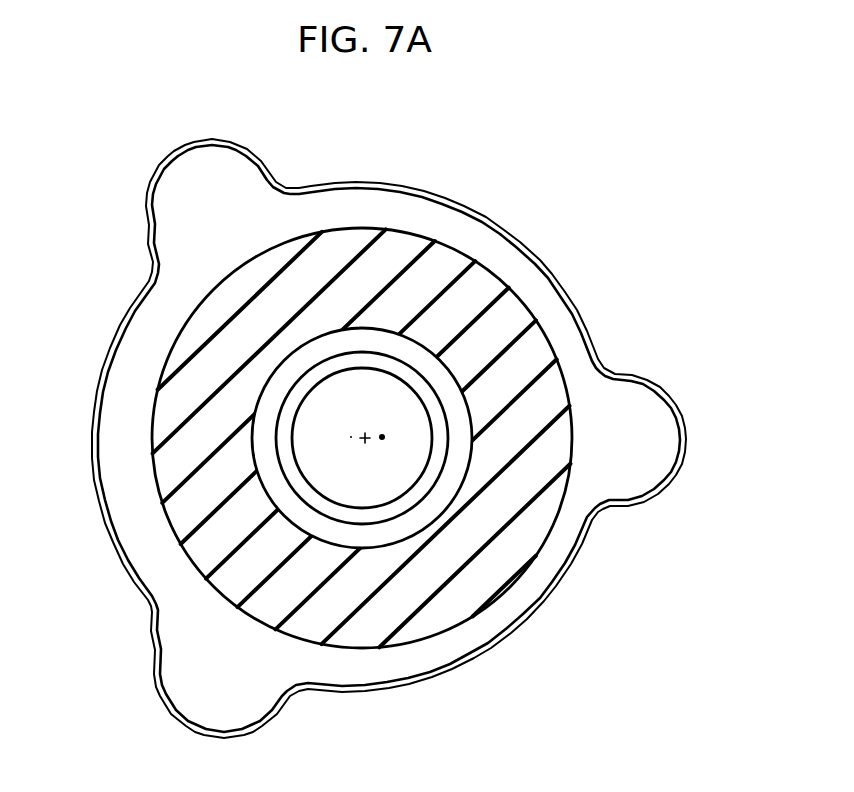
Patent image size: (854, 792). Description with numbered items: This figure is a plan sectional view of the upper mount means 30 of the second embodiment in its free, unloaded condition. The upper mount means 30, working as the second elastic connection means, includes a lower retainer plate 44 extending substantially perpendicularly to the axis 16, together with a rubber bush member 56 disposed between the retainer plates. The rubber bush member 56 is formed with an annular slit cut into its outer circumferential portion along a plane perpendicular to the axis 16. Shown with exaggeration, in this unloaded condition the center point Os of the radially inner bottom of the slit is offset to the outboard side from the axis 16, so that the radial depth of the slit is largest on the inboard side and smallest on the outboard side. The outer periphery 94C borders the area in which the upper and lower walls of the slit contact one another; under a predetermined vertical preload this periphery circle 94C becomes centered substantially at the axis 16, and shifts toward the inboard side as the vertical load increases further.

The upper mount means 30 is at (140, 179).
The lower retainer plate 44 is at (540, 613).
The rubber bush member 56 is at (450, 262).
The outer periphery 94C is at (353, 228).
The axis 16 is at (367, 436).
The center point of the radially inner bottom of the slit OS is at (382, 437).